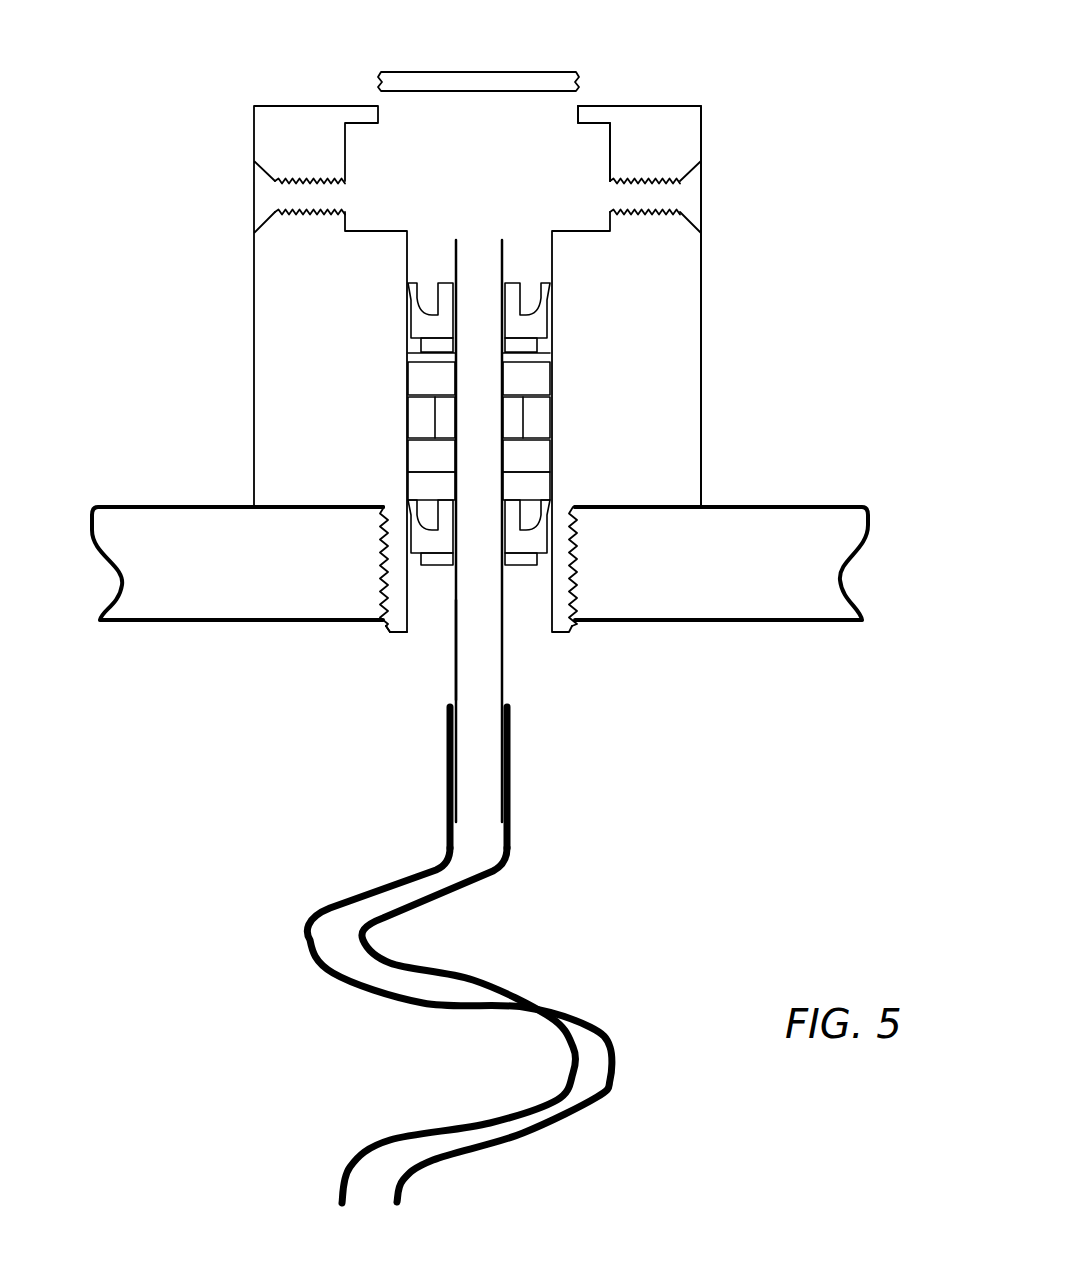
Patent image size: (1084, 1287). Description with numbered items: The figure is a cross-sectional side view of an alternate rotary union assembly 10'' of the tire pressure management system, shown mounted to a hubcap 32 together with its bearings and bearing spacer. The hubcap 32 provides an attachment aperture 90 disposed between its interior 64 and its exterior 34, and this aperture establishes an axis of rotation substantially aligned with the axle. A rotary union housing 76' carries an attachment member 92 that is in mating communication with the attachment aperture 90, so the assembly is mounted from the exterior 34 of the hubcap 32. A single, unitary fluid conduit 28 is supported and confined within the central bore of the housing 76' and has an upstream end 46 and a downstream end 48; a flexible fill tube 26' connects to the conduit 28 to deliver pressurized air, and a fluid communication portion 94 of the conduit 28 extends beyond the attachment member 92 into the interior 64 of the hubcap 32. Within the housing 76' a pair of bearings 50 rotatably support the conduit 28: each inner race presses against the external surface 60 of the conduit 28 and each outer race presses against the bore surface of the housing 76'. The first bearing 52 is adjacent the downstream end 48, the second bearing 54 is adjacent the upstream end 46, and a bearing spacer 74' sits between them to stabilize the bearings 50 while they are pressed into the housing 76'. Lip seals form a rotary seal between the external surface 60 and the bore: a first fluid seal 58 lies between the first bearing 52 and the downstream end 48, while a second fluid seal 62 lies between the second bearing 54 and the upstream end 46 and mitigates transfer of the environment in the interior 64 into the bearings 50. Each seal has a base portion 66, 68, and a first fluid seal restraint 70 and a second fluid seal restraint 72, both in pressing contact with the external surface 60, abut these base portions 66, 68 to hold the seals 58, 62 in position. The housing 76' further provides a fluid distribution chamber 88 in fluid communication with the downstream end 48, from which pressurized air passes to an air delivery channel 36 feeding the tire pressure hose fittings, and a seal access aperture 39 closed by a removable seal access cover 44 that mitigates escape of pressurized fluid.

The rotary union assembly 10'' is at (483, 601).
The fill tube 26' is at (408, 1025).
The fluid conduit 28 is at (452, 651).
The hubcap 32 is at (170, 650).
The exterior of the hubcap 34 is at (170, 506).
The air delivery channel 36 is at (718, 198).
The seal access aperture 39 is at (364, 87).
The seal access cover 44 is at (498, 72).
The upstream end 46 is at (486, 835).
The downstream end 48 is at (486, 228).
The pair of bearings 50 is at (560, 431).
The first bearing 52 is at (427, 377).
The second bearing 54 is at (420, 452).
The first fluid seal 58 is at (404, 303).
The external surface 60 is at (455, 252).
The second fluid seal 62 is at (552, 484).
The interior of the hubcap 64 is at (287, 622).
The base portion of the first fluid seal 66 is at (410, 325).
The base portion of the second fluid seal 68 is at (521, 568).
The first fluid seal restraint 70 is at (432, 346).
The second fluid seal restraint 72 is at (510, 568).
The bearing spacer 74' is at (437, 415).
The rotary union housing 76' is at (700, 296).
The fluid distribution chamber 88 is at (554, 121).
The attachment aperture 90 is at (374, 637).
The attachment member 92 is at (392, 630).
The fluid communication portion 94 is at (470, 768).